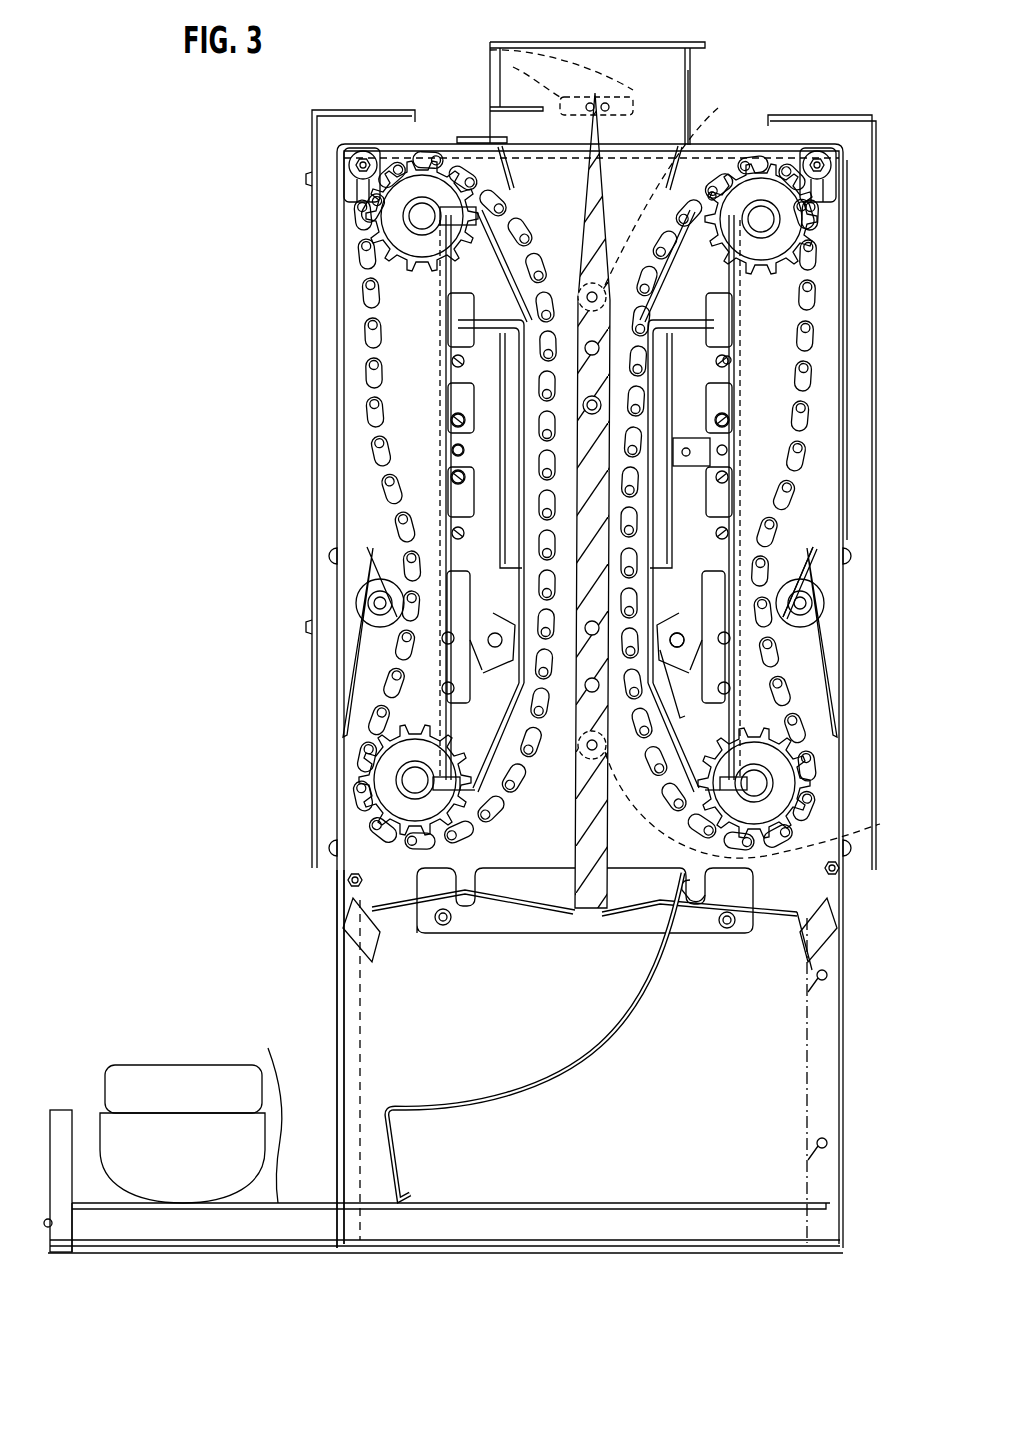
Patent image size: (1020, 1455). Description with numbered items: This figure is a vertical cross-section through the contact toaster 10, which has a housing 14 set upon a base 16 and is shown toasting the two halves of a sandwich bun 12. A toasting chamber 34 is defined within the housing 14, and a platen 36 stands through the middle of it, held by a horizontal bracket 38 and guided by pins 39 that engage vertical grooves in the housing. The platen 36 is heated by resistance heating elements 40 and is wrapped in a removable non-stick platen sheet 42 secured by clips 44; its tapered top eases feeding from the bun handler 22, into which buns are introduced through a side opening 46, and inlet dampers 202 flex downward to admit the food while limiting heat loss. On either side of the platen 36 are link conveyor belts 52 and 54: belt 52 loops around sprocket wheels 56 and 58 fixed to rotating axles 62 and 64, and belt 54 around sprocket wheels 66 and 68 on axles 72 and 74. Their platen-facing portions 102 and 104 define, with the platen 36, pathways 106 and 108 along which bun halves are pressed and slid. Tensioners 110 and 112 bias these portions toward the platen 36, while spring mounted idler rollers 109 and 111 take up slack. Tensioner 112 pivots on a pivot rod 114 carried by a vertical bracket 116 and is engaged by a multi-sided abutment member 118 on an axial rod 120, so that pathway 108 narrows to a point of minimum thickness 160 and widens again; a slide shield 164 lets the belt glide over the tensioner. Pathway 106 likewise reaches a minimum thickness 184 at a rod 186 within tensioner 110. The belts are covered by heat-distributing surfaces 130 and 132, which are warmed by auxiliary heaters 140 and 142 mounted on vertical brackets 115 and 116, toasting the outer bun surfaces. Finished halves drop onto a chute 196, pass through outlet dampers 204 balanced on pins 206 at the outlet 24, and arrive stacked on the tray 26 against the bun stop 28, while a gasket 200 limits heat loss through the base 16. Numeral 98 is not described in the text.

The contact toaster 10 is at (262, 128).
The sandwich bun 12 is at (160, 1048).
The housing 14 is at (847, 383).
The base 16 is at (703, 1218).
The bun handler 22 is at (690, 47).
The outlet 24 is at (340, 977).
The tray 26 is at (283, 1119).
The bun stop 28 is at (50, 1112).
The toasting chamber 34 is at (440, 215).
The platen 36 is at (600, 195).
The horizontal bracket 38 is at (797, 953).
The pins 39 is at (754, 476).
The resistance heating elements 40 is at (513, 693).
The platen sheet 42 is at (410, 808).
The clips 44 is at (488, 45).
The side opening 46 is at (692, 72).
The link conveyor belt 52 is at (443, 520).
The link conveyor belt 54 is at (783, 522).
The sprocket wheel 56 is at (343, 200).
The sprocket wheel 58 is at (348, 876).
The axle 62 is at (420, 210).
The axle 64 is at (398, 770).
The sprocket wheel 66 is at (793, 220).
The sprocket wheel 68 is at (800, 787).
The axle 72 is at (778, 213).
The axle 74 is at (785, 770).
The base plate 98 is at (148, 1205).
The platen-facing portion 102 is at (452, 450).
The platen-facing portion 104 is at (728, 424).
The pathway 106 is at (452, 476).
The pathway 108 is at (727, 405).
The spring mounted idler roller 109 is at (310, 626).
The tensioner 110 is at (446, 317).
The spring mounted idler roller 111 is at (813, 592).
The tensioner 112 is at (730, 685).
The pivot rod 114 is at (737, 533).
The vertical bracket 115 is at (440, 680).
The vertical bracket 116 is at (680, 718).
The abutment member 118 is at (710, 647).
The axial rod 120 is at (780, 615).
The heat-distributing surface 130 is at (373, 288).
The heat-distributing surface 132 is at (817, 347).
The auxiliary heater 140 is at (365, 605).
The auxiliary heater 142 is at (727, 360).
The point of minimum thickness 160 is at (712, 462).
The slide shield 164 is at (712, 195).
The minimum thickness 184 is at (455, 383).
The rod 186 is at (452, 422).
The chute 196 is at (655, 1005).
The gasket 200 is at (165, 1255).
The inlet dampers 202 is at (655, 143).
The outlet dampers 204 is at (843, 866).
The pins 206 is at (770, 890).